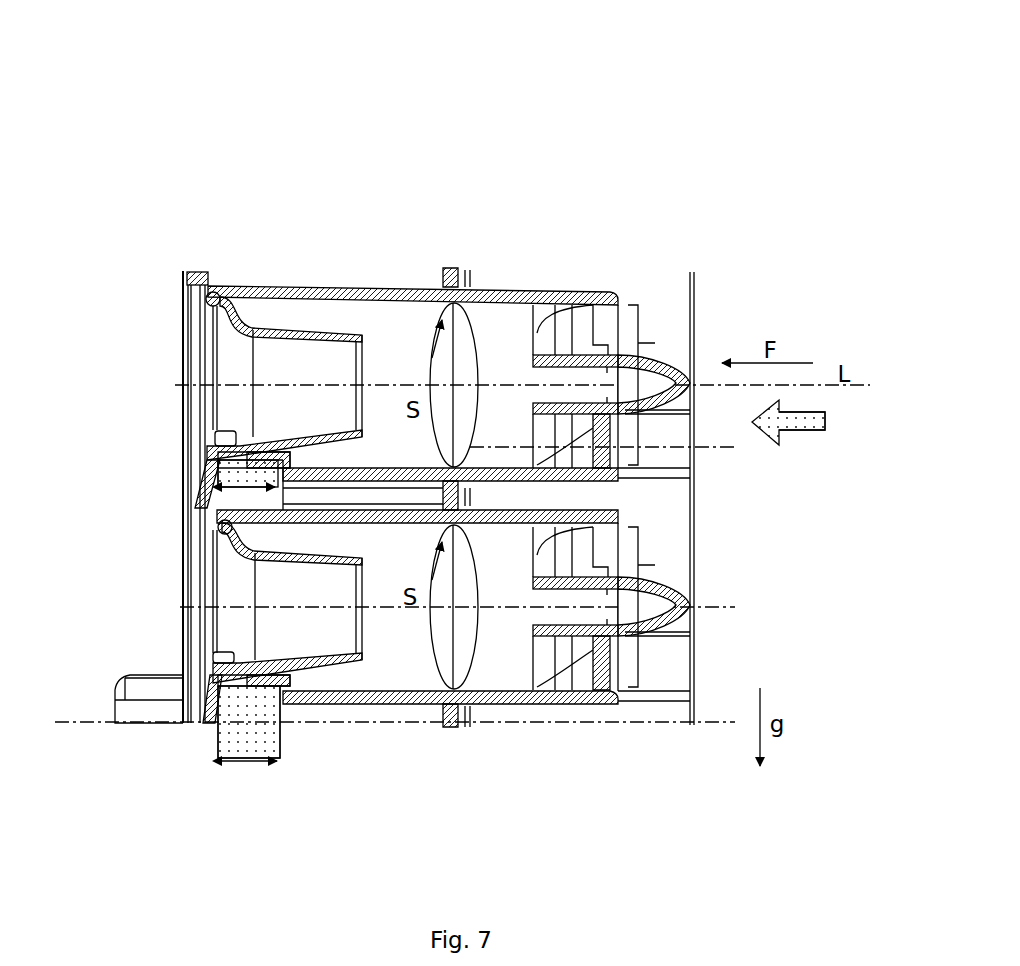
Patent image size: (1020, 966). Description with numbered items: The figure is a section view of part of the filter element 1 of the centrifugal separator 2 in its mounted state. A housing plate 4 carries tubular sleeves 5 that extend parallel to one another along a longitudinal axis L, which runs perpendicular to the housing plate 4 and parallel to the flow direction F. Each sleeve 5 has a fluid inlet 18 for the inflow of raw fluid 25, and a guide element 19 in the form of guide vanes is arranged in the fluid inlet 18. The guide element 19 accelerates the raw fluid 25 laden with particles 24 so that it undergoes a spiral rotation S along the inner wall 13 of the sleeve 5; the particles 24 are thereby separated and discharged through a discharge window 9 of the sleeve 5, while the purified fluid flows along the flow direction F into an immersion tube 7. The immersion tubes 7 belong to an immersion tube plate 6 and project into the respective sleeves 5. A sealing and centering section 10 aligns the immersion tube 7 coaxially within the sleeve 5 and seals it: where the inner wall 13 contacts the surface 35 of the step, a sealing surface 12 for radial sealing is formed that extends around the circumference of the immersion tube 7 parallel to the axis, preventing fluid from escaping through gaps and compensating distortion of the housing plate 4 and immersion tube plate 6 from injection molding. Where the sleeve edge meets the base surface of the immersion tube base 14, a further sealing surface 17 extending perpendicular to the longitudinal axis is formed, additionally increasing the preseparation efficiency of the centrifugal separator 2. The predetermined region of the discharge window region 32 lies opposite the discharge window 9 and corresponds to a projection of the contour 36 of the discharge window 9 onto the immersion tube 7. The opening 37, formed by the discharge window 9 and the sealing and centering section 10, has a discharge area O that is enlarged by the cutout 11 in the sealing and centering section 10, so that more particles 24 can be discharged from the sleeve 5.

The filter element 1 is at (707, 153).
The centrifugal separator 2 is at (710, 301).
The housing plate 4 is at (455, 272).
The tubular sleeve 5 is at (437, 287).
The immersion tube plate 6 is at (205, 497).
The immersion tube 7 is at (316, 290).
The discharge window 9 is at (282, 460).
The sealing and centering section 10 is at (248, 289).
The cutout 11 is at (222, 437).
The sealing surface 12 is at (223, 282).
The inner wall 13 is at (382, 310).
The immersion tube base 14 is at (210, 276).
The sealing surface 17 is at (203, 291).
The fluid inlet 18 is at (656, 496).
The guide element 19 is at (592, 314).
The particles 24 is at (220, 468).
The raw fluid 25 is at (810, 432).
The discharge window region 32 is at (288, 470).
The surface of the step 35 is at (213, 304).
The contour of the discharge window 36 is at (268, 470).
The opening 37 is at (228, 700).